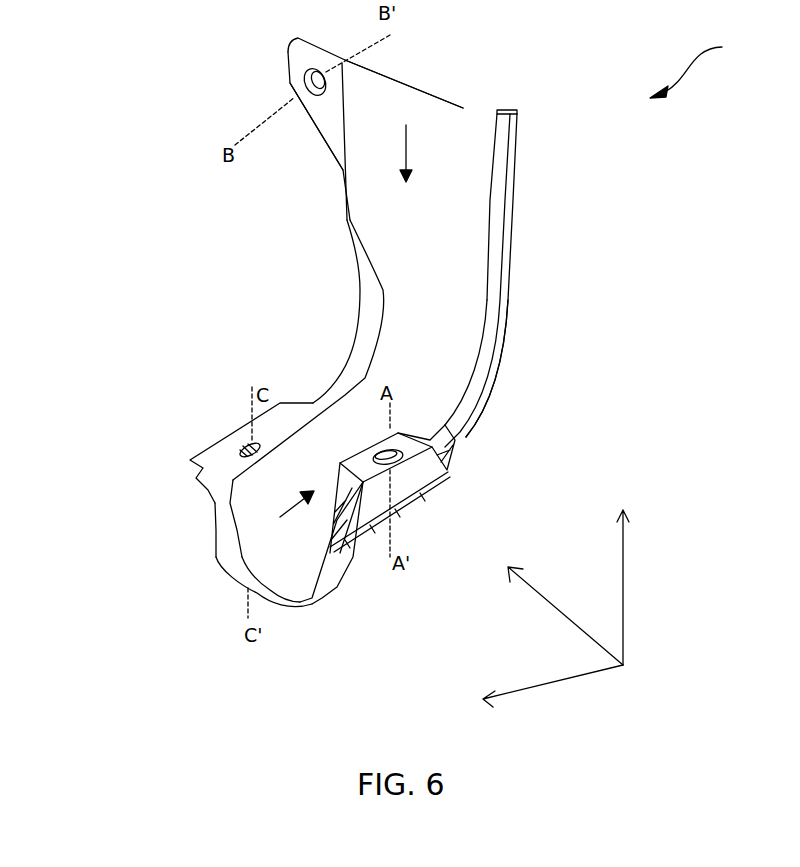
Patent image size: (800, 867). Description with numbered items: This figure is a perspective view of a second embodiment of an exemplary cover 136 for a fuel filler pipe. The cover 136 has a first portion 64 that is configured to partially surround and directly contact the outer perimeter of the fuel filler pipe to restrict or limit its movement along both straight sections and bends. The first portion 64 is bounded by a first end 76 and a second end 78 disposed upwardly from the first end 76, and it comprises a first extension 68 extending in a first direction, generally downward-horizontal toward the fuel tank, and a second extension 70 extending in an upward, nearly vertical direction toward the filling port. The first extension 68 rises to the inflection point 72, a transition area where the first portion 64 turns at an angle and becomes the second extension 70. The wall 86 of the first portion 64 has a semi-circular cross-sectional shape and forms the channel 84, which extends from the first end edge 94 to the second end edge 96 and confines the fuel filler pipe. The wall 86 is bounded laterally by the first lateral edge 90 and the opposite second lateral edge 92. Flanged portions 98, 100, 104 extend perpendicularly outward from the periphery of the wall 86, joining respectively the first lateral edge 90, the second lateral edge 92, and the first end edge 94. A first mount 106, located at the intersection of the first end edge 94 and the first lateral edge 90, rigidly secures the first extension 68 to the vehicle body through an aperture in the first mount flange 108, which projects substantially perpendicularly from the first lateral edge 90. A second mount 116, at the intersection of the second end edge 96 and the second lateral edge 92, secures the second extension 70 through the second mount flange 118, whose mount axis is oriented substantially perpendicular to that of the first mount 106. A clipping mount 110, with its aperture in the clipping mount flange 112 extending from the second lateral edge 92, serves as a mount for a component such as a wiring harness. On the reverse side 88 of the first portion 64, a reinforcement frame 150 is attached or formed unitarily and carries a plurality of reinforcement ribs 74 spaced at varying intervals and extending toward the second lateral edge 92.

The first portion 64 is at (517, 143).
The first extension 68 is at (265, 548).
The second extension 70 is at (447, 180).
The inflection point 72 is at (440, 388).
The reinforcement ribs 74 is at (350, 553).
The first end 76 is at (222, 553).
The second end 78 is at (397, 70).
The channel 84 is at (331, 316).
The wall 86 is at (450, 302).
The reverse side 88 is at (393, 522).
The first lateral edge 90 is at (490, 262).
The second lateral edge 92 is at (383, 292).
The first end edge 94 is at (296, 588).
The second end edge 96 is at (463, 107).
The flanged portion 98 is at (490, 338).
The flanged portion 100 is at (363, 325).
The flanged portion 104 is at (330, 600).
The first mount 106 is at (400, 457).
The first mount flange 108 is at (410, 453).
The clipping mount 110 is at (240, 447).
The clipping mount flange 112 is at (197, 460).
The second mount 116 is at (306, 76).
The second mount flange 118 is at (312, 112).
The cover 136 is at (707, 67).
The reinforcement frame 150 is at (447, 472).